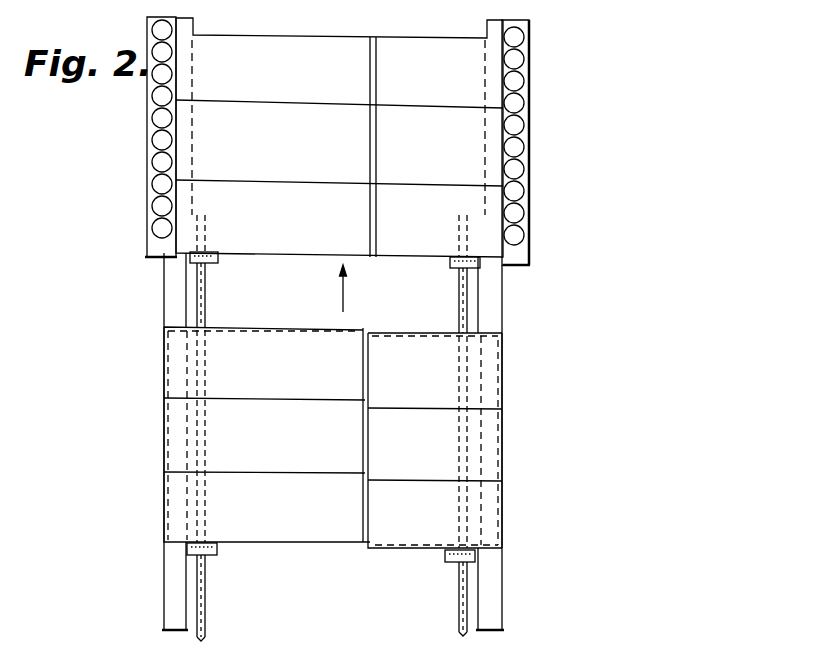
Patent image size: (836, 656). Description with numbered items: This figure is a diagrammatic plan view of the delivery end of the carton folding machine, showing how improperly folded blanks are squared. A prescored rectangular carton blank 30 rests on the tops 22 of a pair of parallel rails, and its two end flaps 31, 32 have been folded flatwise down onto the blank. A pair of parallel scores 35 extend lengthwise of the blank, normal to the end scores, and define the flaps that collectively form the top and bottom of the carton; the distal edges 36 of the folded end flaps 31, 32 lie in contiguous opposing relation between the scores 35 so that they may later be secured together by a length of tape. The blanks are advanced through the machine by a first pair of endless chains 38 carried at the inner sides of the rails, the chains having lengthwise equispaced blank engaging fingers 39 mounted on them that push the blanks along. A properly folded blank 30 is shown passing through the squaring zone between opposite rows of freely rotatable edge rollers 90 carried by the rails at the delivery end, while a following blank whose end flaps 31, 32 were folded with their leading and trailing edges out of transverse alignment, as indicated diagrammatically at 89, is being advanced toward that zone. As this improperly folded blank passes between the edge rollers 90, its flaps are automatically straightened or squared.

The tops of rails 22 is at (164, 578).
The prescored rectangular carton blank 30 is at (298, 240).
The end flap 31 is at (254, 238).
The end flap 32 is at (422, 245).
The parallel scores 35 is at (407, 106).
The distal edges of end flaps 36 is at (376, 160).
The endless chains 38 is at (203, 608).
The blank engaging fingers 39 is at (217, 265).
The misaligned flap edges 89 is at (364, 327).
The edge rollers 90 is at (160, 183).